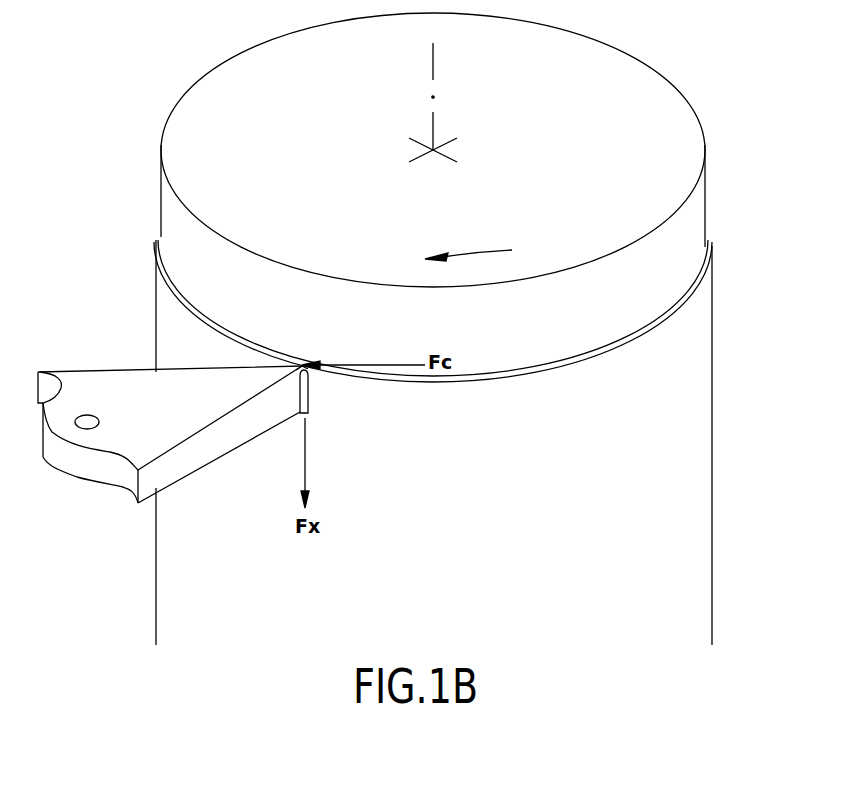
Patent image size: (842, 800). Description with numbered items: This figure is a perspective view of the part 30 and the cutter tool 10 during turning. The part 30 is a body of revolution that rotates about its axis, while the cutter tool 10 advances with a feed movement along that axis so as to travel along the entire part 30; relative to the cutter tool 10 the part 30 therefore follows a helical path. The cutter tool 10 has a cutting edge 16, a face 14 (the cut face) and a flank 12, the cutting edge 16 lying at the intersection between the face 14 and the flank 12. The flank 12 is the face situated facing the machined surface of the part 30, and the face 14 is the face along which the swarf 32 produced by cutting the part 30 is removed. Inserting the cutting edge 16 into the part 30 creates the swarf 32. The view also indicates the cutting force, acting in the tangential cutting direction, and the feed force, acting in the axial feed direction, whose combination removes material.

The part 30 is at (573, 157).
The cutter tool 10 is at (199, 410).
The flank 12 is at (87, 368).
The face 14 is at (232, 440).
The cutting edge 16 is at (312, 372).
The swarf 32 is at (310, 416).